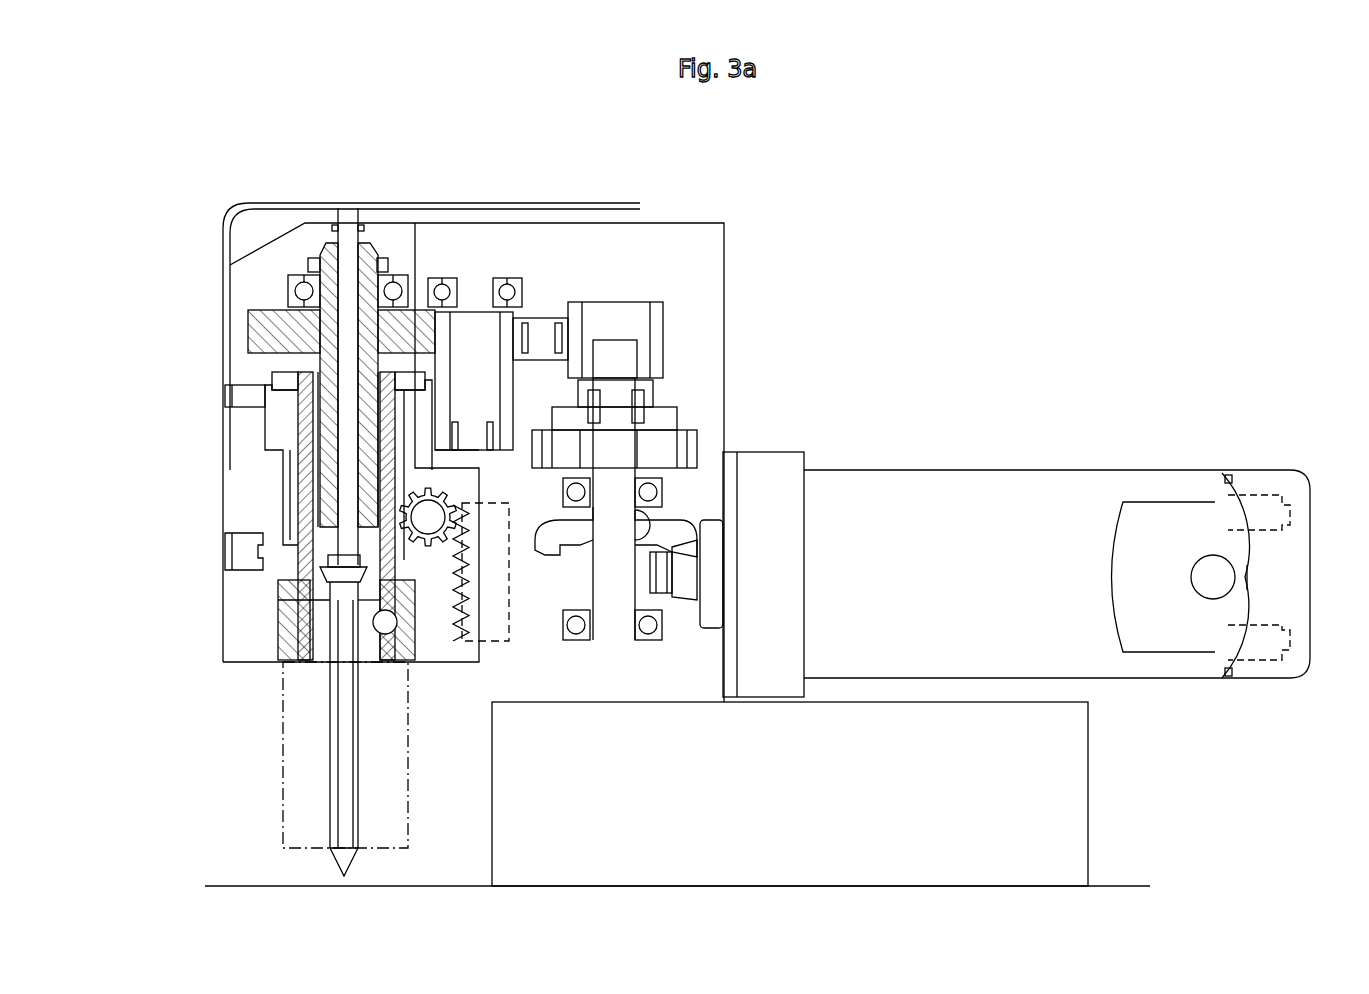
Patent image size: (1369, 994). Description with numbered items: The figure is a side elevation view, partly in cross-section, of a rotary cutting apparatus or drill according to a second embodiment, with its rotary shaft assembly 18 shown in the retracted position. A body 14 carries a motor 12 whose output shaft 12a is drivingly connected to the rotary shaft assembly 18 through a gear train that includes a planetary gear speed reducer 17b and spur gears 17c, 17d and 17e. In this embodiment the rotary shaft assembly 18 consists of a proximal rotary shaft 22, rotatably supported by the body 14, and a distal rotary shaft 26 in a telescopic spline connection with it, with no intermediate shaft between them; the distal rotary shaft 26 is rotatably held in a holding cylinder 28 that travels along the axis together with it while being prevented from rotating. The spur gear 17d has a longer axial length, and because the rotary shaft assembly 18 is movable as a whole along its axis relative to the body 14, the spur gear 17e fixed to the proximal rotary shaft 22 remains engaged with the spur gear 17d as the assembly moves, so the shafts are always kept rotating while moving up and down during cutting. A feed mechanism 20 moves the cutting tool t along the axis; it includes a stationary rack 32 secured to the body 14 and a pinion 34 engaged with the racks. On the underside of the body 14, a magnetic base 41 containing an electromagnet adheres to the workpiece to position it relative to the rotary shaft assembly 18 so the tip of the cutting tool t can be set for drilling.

The motor 12 is at (945, 470).
The output shaft 12a is at (703, 553).
The body 14 is at (627, 243).
The planetary gear speed reducer 17b is at (683, 415).
The spur gear 17c is at (660, 308).
The spur gear 17d is at (462, 312).
The spur gear 17e is at (268, 310).
The rotary shaft assembly 18 is at (402, 238).
The feed mechanism 20 is at (441, 653).
The proximal rotary shaft 22 is at (370, 245).
The distal rotary shaft 26 is at (290, 590).
The holding cylinder 28 is at (285, 425).
The stationary rack 32 is at (497, 641).
The pinion 34 is at (430, 518).
The magnetic base 41 is at (790, 794).
The cutting tool t is at (283, 748).